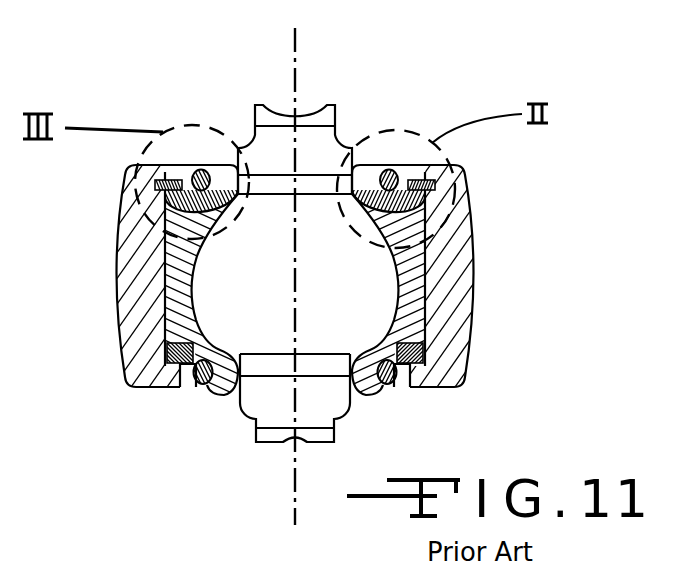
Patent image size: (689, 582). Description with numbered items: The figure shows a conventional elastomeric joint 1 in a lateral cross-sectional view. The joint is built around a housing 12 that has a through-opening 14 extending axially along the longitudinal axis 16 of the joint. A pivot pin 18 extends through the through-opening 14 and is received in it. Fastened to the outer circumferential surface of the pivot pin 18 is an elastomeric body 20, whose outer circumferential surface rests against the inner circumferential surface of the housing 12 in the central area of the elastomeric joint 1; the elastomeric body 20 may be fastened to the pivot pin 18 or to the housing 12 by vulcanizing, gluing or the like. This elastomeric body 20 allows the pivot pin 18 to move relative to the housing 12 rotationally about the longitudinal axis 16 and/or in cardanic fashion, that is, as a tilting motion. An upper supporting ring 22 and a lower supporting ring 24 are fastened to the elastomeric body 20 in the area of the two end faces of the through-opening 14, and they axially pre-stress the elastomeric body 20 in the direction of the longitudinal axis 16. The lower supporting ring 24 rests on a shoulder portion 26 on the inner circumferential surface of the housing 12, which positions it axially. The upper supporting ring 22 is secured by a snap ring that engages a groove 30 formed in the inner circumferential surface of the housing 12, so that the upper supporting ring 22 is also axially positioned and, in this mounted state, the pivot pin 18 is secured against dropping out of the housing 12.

The elastomeric joint 1 is at (196, 70).
The housing 12 is at (143, 317).
The through-opening 14 is at (187, 390).
The longitudinal axis 16 is at (293, 487).
The pivot pin 18 is at (223, 272).
The elastomeric body 20 is at (420, 272).
The upper supporting ring 22 is at (173, 203).
The lower supporting ring 24 is at (402, 356).
The shoulder portion 26 is at (420, 372).
The groove 30 is at (433, 178).